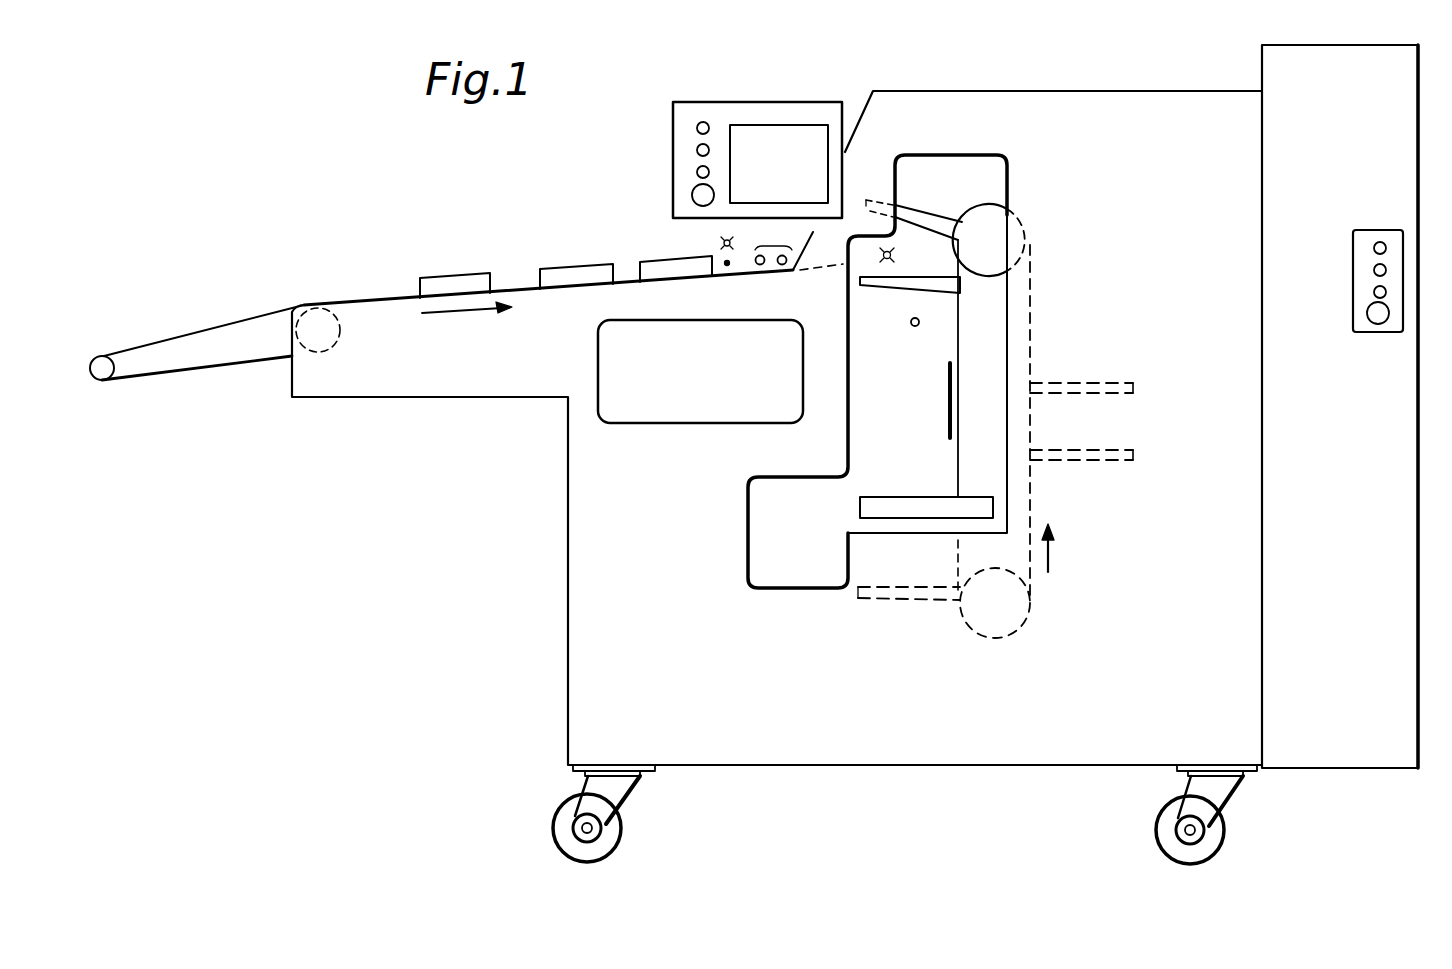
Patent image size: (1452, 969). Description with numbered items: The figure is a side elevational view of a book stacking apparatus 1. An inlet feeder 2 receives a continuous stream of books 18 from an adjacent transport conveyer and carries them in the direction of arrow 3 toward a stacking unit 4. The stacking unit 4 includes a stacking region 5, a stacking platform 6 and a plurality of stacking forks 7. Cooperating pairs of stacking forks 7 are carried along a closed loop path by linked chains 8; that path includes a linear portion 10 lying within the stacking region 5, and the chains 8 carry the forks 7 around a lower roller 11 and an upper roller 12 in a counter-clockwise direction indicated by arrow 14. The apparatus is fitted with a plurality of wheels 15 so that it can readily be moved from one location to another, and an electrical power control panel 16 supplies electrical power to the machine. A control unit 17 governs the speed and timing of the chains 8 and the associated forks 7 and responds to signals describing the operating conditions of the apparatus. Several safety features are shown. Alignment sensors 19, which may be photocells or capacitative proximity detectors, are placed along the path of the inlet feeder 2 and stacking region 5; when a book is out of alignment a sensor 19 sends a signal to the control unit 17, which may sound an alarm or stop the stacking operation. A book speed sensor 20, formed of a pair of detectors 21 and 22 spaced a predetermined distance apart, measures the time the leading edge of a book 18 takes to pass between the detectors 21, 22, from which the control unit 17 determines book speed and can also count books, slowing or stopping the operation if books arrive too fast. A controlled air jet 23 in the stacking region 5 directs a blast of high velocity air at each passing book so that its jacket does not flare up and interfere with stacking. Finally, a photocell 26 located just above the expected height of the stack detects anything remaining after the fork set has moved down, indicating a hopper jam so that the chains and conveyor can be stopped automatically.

The book stacking apparatus 1 is at (1072, 91).
The inlet feeder 2 is at (200, 368).
The arrow 3 is at (466, 322).
The stacking unit 4 is at (1010, 178).
The stacking region 5 is at (912, 353).
The stacking platform 6 is at (945, 533).
The stacking forks 7 is at (1128, 396).
The linked chains 8 is at (1032, 355).
The linear portion 10 is at (940, 400).
The lower roller 11 is at (1030, 614).
The upper roller 12 is at (1028, 241).
The arrow 14 is at (1052, 556).
The wheels 15 is at (622, 828).
The electrical power control panel 16 is at (1405, 245).
The control unit 17 is at (746, 102).
The books 18 is at (478, 273).
The alignment sensors 19 is at (718, 250).
The book speed sensor 20 is at (768, 235).
The detector 21 is at (757, 265).
The detector 22 is at (782, 265).
The controlled air jet 23 is at (898, 253).
The photocell 26 is at (908, 321).